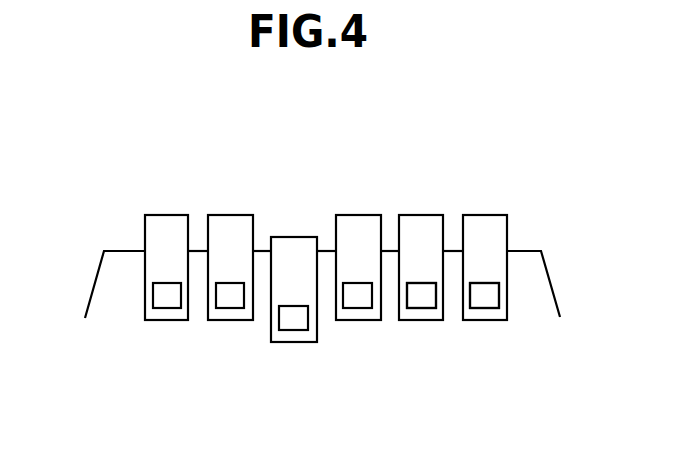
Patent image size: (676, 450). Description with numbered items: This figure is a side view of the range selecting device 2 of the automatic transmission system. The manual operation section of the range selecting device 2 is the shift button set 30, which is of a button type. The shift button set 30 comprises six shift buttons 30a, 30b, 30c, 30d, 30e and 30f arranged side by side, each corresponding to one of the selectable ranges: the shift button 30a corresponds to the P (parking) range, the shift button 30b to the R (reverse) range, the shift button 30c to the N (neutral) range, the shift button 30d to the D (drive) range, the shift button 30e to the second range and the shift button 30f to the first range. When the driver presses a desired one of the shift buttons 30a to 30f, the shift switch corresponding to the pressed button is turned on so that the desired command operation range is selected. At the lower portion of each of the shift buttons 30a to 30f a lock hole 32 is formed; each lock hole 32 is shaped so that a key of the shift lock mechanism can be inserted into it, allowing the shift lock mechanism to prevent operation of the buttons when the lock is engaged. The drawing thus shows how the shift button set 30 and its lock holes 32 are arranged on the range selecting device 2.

The range selecting device 2 is at (104, 190).
The shift button set 30 is at (488, 133).
The shift button 30a is at (155, 215).
The shift button 30b is at (218, 215).
The shift button 30c is at (277, 237).
The shift button 30d is at (348, 215).
The shift button 30e is at (413, 215).
The shift button 30f is at (475, 215).
The lock hole 32 is at (422, 302).